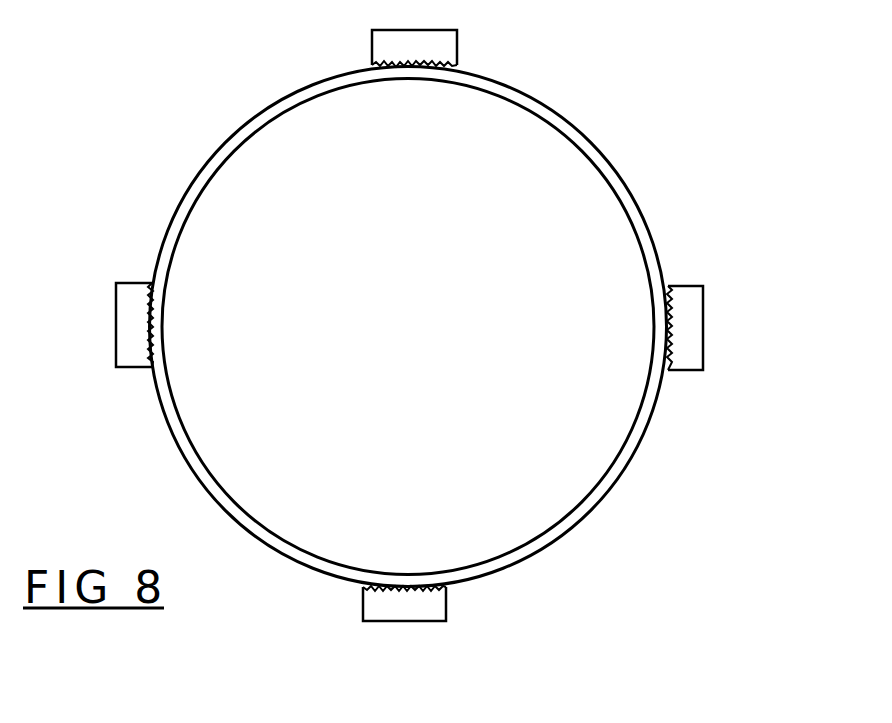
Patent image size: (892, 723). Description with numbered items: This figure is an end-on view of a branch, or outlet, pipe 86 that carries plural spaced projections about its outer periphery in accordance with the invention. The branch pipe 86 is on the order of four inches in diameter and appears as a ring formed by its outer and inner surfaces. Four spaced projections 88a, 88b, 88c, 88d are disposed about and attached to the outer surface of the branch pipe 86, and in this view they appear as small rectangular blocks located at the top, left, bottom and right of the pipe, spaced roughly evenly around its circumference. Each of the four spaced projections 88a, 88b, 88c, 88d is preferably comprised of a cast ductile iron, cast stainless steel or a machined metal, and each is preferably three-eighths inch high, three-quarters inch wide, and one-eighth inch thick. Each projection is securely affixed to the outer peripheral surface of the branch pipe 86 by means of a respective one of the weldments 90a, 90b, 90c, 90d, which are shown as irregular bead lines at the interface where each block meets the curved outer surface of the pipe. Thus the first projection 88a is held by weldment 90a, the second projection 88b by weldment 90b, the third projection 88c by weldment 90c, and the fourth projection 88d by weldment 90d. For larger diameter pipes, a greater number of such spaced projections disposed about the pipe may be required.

The branch pipe 86 is at (588, 109).
The spaced projection 88a is at (438, 40).
The spaced projection 88b is at (133, 308).
The spaced projection 88c is at (381, 608).
The spaced projection 88d is at (690, 350).
The weldment 90a is at (372, 63).
The weldment 90b is at (149, 366).
The weldment 90c is at (447, 588).
The weldment 90d is at (669, 288).